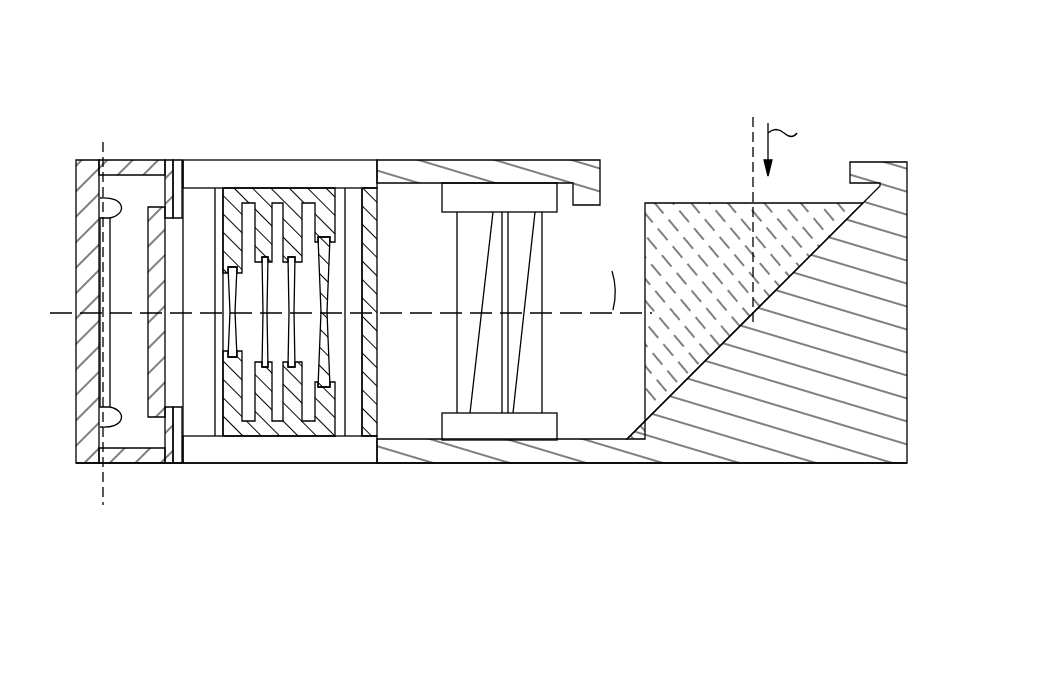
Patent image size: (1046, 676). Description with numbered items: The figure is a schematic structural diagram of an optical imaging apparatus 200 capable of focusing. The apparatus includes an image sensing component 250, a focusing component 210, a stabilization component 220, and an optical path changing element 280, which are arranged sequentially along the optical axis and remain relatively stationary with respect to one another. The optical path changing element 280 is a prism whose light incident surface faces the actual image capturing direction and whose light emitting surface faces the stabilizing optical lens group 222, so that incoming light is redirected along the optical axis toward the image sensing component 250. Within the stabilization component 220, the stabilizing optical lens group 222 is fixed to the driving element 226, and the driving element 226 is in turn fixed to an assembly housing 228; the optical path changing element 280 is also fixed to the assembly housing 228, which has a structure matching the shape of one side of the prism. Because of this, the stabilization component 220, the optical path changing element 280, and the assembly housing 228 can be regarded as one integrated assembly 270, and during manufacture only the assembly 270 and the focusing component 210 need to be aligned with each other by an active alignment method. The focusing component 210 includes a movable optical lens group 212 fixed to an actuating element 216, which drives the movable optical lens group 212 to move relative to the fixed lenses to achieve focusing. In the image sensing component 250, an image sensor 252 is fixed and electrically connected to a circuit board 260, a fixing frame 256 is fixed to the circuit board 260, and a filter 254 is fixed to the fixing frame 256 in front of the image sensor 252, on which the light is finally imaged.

The optical imaging apparatus capable of focusing 200 is at (932, 92).
The focusing component 210 is at (378, 113).
The movable optical lens group 212 is at (265, 260).
The actuating element 216 is at (339, 172).
The stabilization component 220 is at (562, 113).
The stabilizing optical lens group 222 is at (496, 242).
The driving element 226 is at (532, 197).
The assembly housing 228 is at (410, 176).
The image sensing component 250 is at (57, 113).
The image sensor 252 is at (87, 240).
The filter 254 is at (158, 240).
The fixing frame 256 is at (140, 168).
The circuit board 260 is at (83, 428).
The integrated assembly 270 is at (768, 5).
The optical path changing element 280 is at (680, 213).